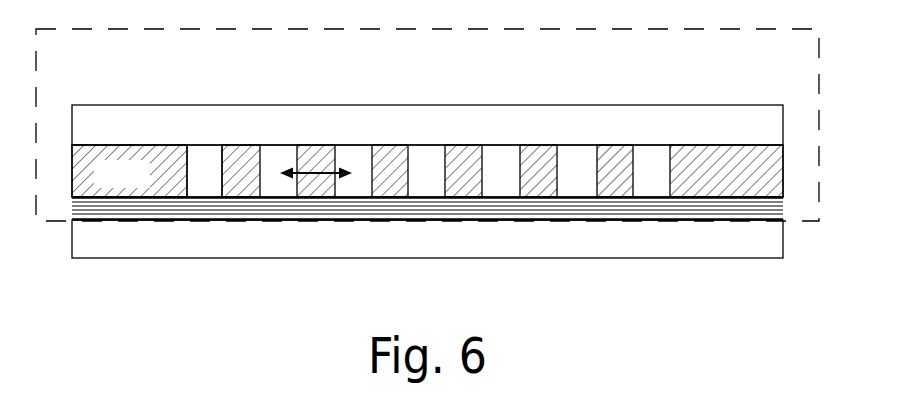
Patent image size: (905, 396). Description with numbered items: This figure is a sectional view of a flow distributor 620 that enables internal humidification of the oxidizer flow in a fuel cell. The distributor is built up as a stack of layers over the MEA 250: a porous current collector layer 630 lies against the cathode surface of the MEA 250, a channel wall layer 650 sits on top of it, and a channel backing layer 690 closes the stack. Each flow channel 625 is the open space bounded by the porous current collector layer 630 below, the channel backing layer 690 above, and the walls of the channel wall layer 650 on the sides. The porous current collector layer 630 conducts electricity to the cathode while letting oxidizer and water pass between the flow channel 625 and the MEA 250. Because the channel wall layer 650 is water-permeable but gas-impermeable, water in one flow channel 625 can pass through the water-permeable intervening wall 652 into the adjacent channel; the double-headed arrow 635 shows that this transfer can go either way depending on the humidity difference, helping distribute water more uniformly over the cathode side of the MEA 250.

The flow distributor 620 is at (99, 63).
The channel backing layer 690 is at (147, 136).
The channel wall layer 650 is at (147, 186).
The water-permeable intervening wall 652 is at (316, 178).
The flow channel 625 is at (204, 178).
The porous current collector layer 630 is at (727, 222).
The MEA 250 is at (146, 251).
The double-headed arrow 635 is at (315, 170).